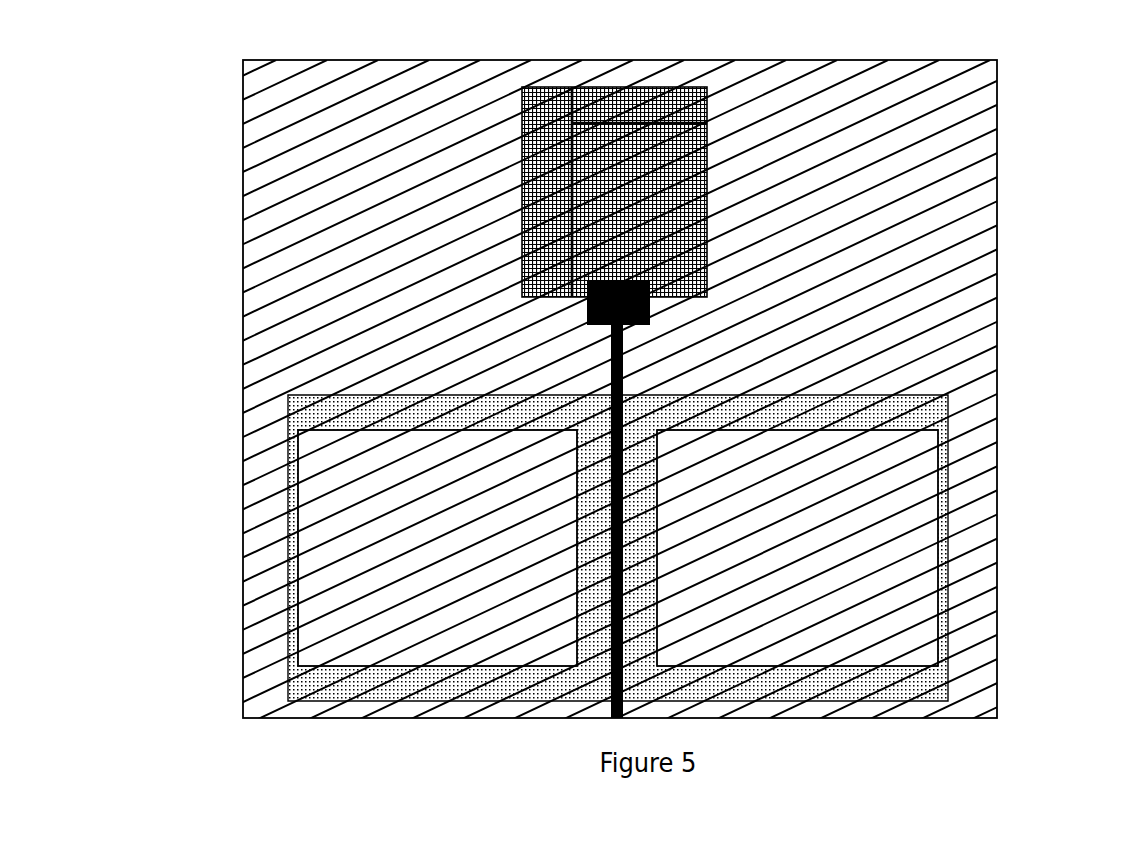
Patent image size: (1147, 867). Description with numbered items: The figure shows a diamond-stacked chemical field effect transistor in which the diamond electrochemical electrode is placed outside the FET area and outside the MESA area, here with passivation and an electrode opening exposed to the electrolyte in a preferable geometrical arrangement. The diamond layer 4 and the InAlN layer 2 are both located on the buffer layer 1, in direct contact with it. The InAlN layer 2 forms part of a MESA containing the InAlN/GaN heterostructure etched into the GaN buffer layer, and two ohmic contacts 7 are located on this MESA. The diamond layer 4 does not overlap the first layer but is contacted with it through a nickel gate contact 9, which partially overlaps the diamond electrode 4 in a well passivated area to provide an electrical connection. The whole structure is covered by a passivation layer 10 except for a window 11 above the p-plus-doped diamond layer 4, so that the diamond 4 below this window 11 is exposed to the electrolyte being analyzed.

The buffer layer 1 is at (935, 338).
The InAlN layer 2 is at (937, 413).
The diamond layer 4 is at (546, 98).
The ohmic contacts 7 is at (350, 619).
The nickel gate contact 9 is at (650, 318).
The passivation layer 10 is at (933, 255).
The electrode opening 11 is at (636, 140).